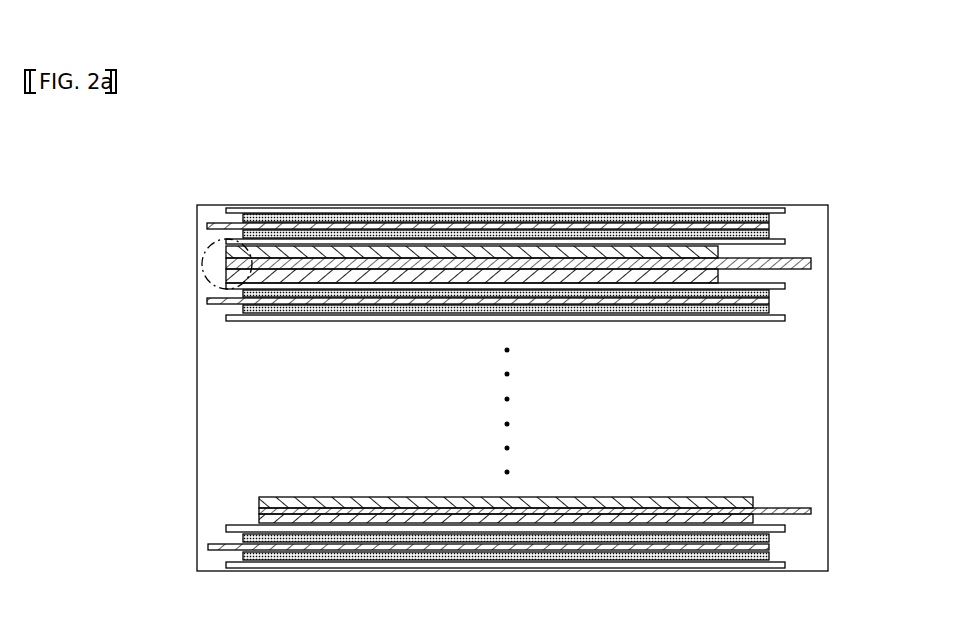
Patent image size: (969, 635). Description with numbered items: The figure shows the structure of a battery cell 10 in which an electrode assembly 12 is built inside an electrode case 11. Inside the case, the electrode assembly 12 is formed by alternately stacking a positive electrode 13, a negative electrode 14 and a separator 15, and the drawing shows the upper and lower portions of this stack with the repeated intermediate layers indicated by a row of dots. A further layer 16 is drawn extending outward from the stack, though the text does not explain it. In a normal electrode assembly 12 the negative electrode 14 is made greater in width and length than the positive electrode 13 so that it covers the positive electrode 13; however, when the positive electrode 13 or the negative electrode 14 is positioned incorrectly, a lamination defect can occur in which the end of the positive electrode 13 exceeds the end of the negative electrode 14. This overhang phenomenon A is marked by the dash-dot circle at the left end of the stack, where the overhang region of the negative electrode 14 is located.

The battery cell 10 is at (136, 178).
The electrode case 11 is at (828, 418).
The electrode assembly 12 is at (236, 423).
The positive electrode 13 is at (258, 516).
The negative electrode 14 is at (769, 300).
The separator 15 is at (228, 319).
The current collector 16 is at (812, 264).
The overhang phenomenon A is at (210, 241).